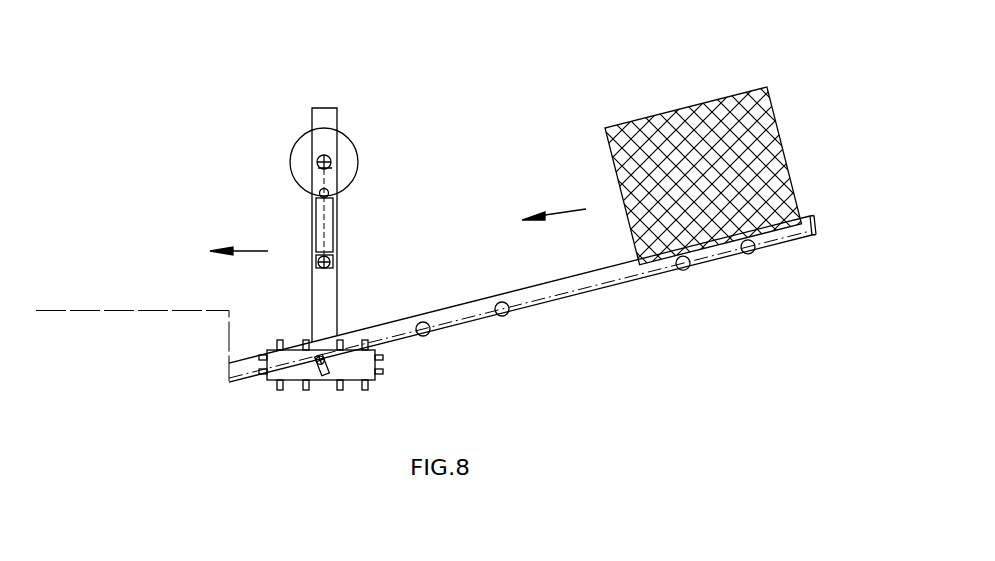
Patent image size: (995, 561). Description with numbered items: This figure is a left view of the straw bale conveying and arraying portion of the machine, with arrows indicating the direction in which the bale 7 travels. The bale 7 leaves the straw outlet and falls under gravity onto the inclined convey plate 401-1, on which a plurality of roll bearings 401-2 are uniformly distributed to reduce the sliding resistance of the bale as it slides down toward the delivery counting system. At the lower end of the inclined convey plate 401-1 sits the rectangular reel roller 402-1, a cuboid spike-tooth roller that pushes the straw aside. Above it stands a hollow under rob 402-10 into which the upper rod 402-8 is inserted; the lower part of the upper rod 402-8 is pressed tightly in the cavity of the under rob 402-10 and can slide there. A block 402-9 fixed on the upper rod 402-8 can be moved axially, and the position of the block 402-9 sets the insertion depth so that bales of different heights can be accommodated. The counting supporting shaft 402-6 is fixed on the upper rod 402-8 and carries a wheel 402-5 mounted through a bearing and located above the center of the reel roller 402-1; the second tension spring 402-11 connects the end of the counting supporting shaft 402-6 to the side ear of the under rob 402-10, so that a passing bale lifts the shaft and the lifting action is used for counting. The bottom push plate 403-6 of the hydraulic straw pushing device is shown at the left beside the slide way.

The bale 7 is at (768, 138).
The convey plate 401-1 is at (577, 293).
The roll bearing 401-2 is at (497, 310).
The rectangular reel roller 402-1 is at (272, 378).
The wheel 402-5 is at (355, 147).
The counting supporting shaft 402-6 is at (318, 160).
The upper rod 402-8 is at (317, 108).
The block 402-9 is at (329, 193).
The under rob 402-10 is at (337, 280).
The second tension spring 402-11 is at (312, 252).
The bottom push plate 403-6 is at (157, 310).